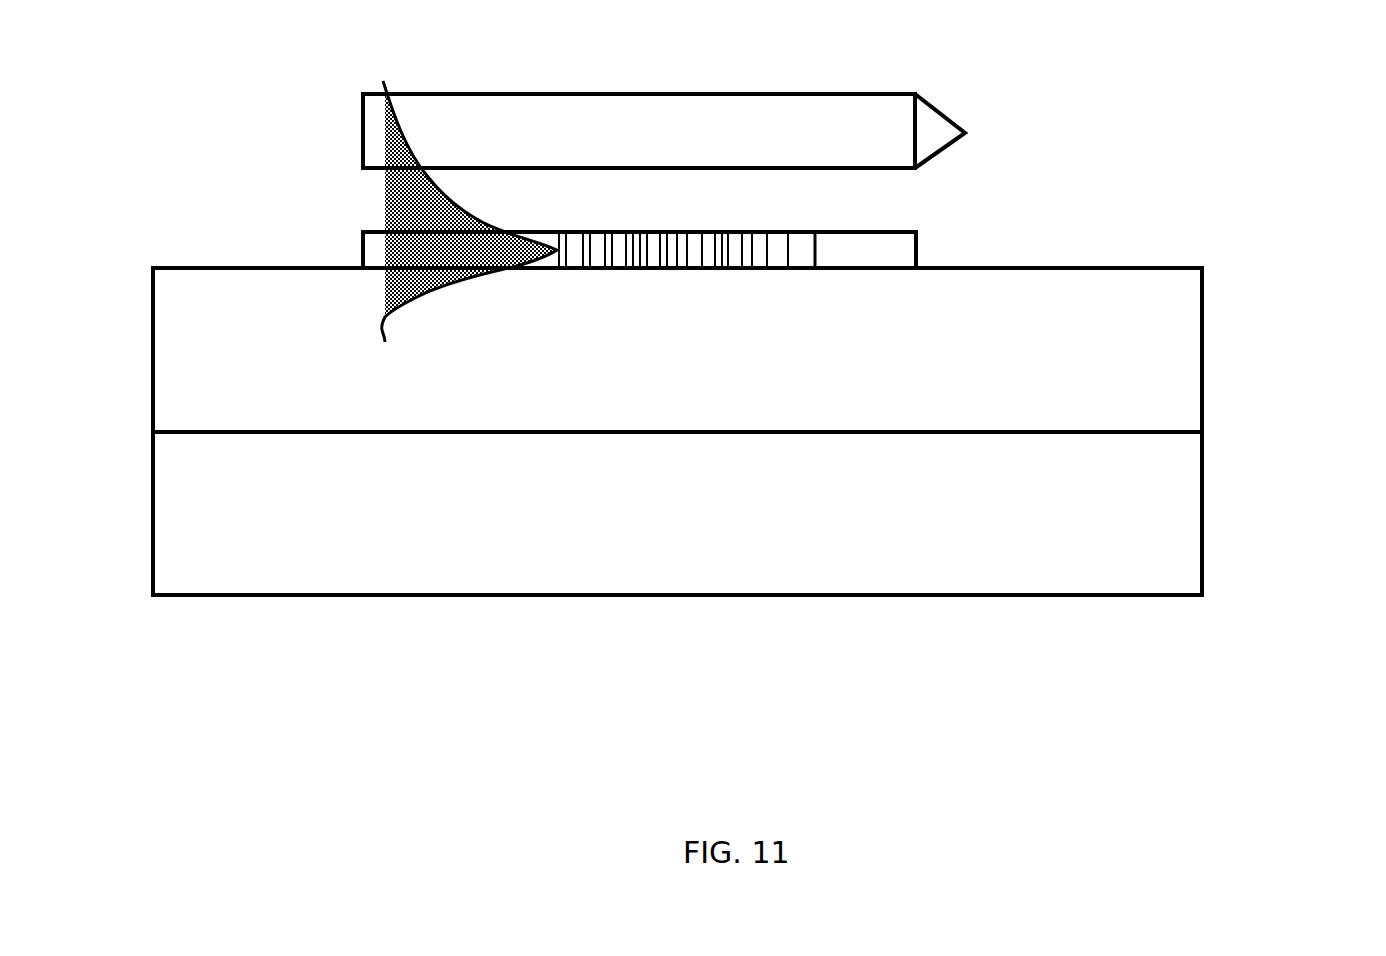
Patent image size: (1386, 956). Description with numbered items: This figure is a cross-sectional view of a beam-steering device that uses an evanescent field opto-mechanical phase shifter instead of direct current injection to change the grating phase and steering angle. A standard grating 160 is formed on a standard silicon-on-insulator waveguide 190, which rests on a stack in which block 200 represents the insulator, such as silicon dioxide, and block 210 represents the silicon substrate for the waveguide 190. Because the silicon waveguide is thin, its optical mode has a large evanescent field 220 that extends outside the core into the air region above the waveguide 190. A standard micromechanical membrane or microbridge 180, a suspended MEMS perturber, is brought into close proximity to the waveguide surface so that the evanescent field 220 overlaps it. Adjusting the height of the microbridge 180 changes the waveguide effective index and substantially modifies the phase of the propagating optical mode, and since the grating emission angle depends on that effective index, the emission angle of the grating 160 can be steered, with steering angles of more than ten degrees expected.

The grating 160 is at (742, 250).
The micromechanical membrane (MEMS microbridge) 180 is at (865, 131).
The silicon-on-insulator waveguide 190 is at (890, 256).
The insulator 200 is at (1152, 513).
The silicon substrate 210 is at (1165, 376).
The evanescent field 220 is at (397, 143).